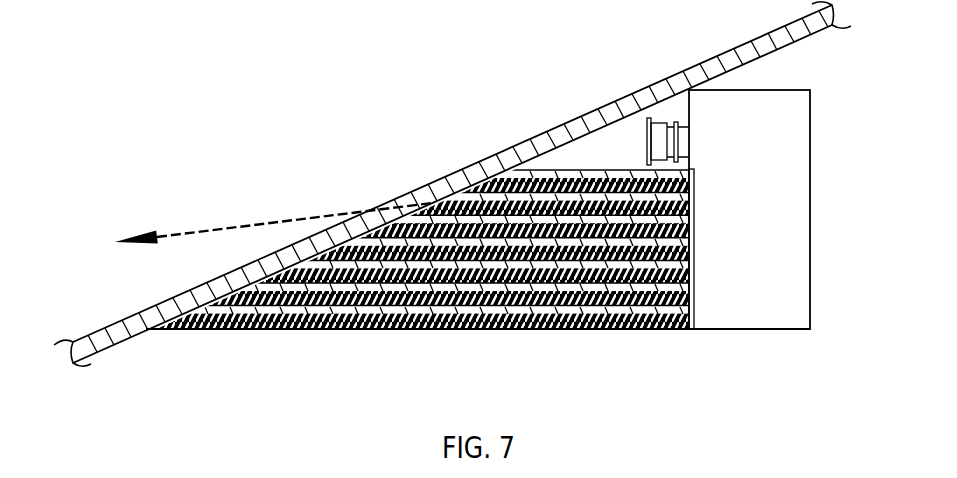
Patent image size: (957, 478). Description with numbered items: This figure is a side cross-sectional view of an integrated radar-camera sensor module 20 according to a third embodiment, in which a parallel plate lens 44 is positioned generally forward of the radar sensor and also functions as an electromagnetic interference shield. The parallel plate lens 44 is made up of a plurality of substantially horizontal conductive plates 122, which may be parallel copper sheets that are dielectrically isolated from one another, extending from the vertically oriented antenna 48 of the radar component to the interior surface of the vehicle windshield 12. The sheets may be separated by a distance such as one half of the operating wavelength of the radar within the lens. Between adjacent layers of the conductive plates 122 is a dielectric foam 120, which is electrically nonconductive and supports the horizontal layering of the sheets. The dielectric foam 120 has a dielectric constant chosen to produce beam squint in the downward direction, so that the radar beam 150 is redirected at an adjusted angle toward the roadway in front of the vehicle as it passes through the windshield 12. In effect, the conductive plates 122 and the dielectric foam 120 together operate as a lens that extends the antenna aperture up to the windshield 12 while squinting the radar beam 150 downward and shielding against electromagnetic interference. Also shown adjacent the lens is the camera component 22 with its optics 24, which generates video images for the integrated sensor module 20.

The vehicle windshield 12 is at (683, 70).
The integrated radar-camera sensor module 20 is at (503, 243).
The camera component 22 is at (657, 118).
The optics 24 is at (788, 228).
The parallel plate lens 44 is at (413, 343).
The vertical oriented antenna 48 is at (697, 292).
The dielectric foam 120 is at (603, 177).
The conductive plates 122 is at (692, 258).
The radar beam 150 is at (240, 223).